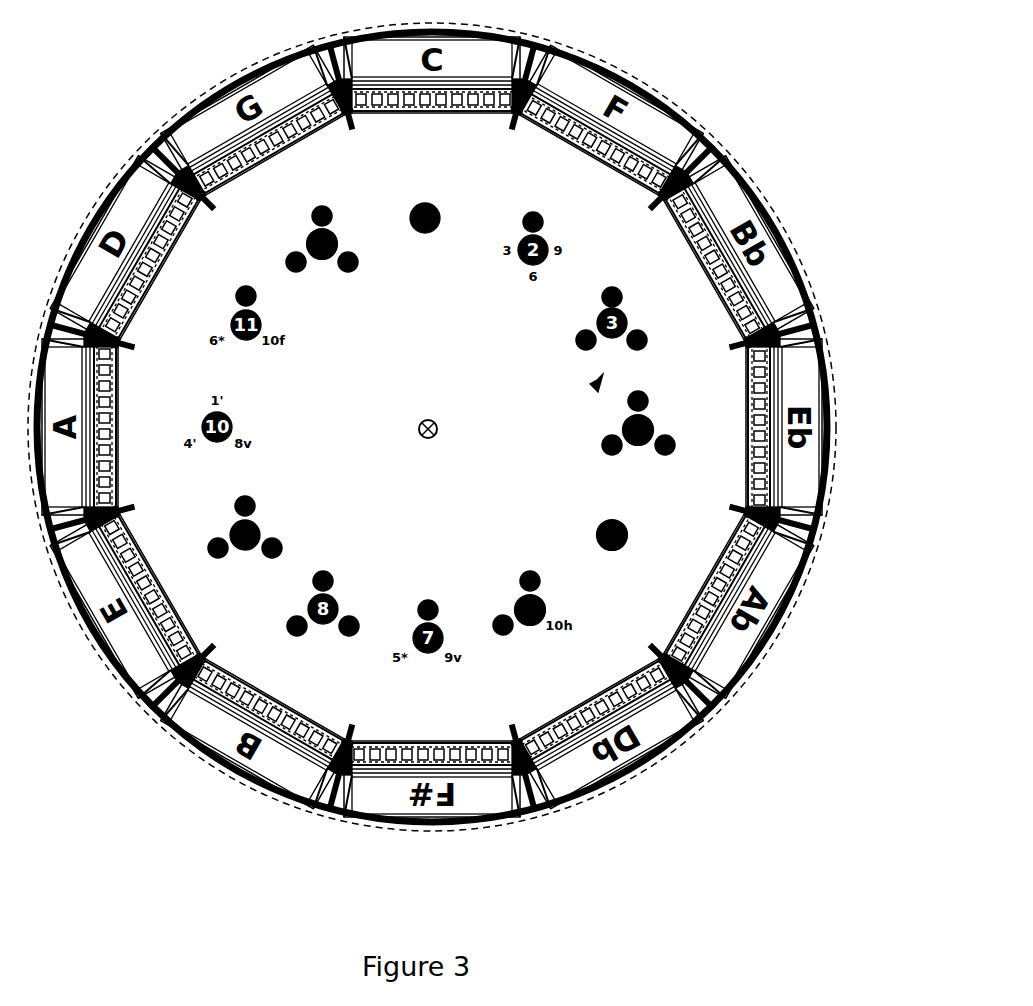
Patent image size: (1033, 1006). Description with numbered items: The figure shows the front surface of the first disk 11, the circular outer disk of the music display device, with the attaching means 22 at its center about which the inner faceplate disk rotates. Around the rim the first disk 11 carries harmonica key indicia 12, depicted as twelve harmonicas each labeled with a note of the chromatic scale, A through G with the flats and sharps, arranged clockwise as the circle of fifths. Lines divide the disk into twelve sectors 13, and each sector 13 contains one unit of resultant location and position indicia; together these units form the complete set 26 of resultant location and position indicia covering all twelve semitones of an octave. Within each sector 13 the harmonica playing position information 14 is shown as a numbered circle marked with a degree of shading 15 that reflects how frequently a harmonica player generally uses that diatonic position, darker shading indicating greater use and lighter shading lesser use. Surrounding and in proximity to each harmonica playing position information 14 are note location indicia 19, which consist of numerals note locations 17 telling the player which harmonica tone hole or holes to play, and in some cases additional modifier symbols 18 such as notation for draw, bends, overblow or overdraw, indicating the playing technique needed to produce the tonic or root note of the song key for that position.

The first disk 11 is at (320, 826).
The harmonica key indicia 12 is at (775, 230).
The sector 13 is at (111, 350).
The harmonica playing position information 14 is at (458, 228).
The degree of shading 15 is at (626, 522).
The numerals note locations 17 is at (425, 256).
The additional modifier symbols 18 is at (351, 272).
The note location indicia 19 is at (276, 531).
The attaching means 22 is at (432, 438).
The complete set of resultant location and position indicia 26 is at (598, 382).